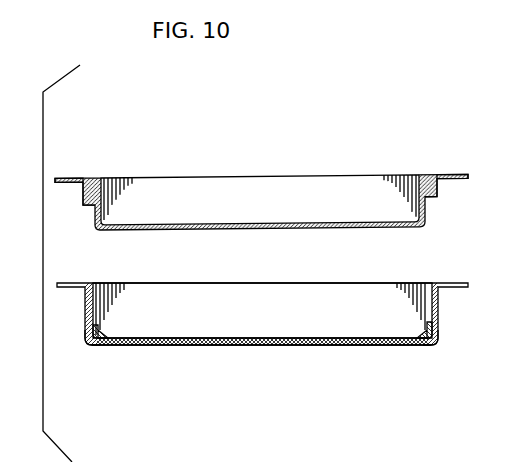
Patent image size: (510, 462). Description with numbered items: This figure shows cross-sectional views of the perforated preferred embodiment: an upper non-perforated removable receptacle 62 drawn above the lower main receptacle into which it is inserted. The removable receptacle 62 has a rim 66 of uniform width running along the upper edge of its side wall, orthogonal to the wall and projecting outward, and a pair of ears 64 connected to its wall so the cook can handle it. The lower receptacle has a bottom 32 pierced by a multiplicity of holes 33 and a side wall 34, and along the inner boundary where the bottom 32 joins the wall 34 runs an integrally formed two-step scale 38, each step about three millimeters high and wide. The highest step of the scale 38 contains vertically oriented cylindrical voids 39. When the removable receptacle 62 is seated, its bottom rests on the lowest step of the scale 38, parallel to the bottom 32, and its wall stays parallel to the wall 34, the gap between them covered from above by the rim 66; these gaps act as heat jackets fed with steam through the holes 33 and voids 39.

The non-perforated removable receptacle 62 is at (242, 164).
The ear 64 is at (70, 177).
The rim 66 is at (93, 178).
The wall 34 is at (227, 303).
The bottom 32 is at (243, 346).
The holes 33 is at (180, 346).
The two-step scale 38 is at (98, 340).
The vertically oriented cylindrical voids 39 is at (93, 347).